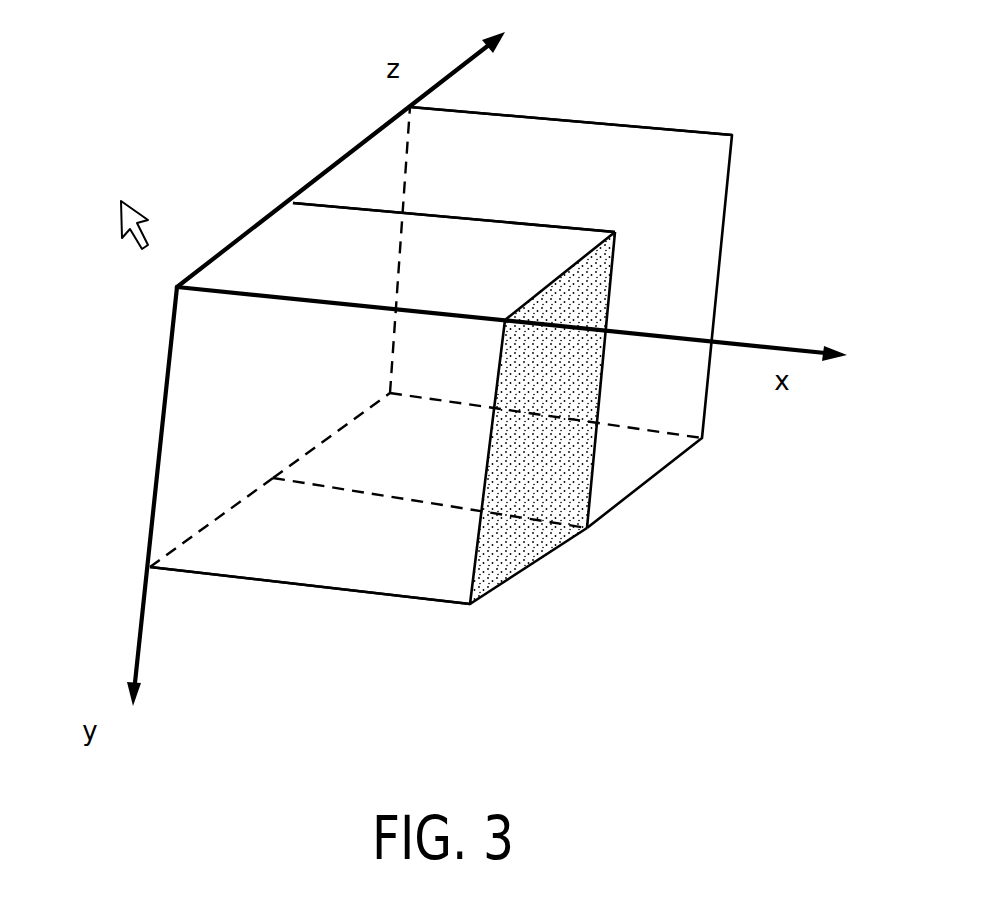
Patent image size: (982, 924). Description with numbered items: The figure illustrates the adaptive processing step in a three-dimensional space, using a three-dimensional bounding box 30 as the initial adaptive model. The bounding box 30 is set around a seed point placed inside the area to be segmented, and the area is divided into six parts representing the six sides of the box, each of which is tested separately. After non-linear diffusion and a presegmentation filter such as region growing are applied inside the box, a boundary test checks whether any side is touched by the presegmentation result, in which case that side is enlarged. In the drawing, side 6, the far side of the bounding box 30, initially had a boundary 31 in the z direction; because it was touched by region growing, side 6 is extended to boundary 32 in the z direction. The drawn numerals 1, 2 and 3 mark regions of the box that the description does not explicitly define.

The first volume block 1 is at (382, 403).
The second volume block 2 is at (502, 317).
The stippled interface face 3 is at (542, 418).
The side 6 is at (659, 331).
The bounding box 30 is at (410, 598).
The boundary 31 is at (328, 203).
The boundary 32 is at (612, 122).